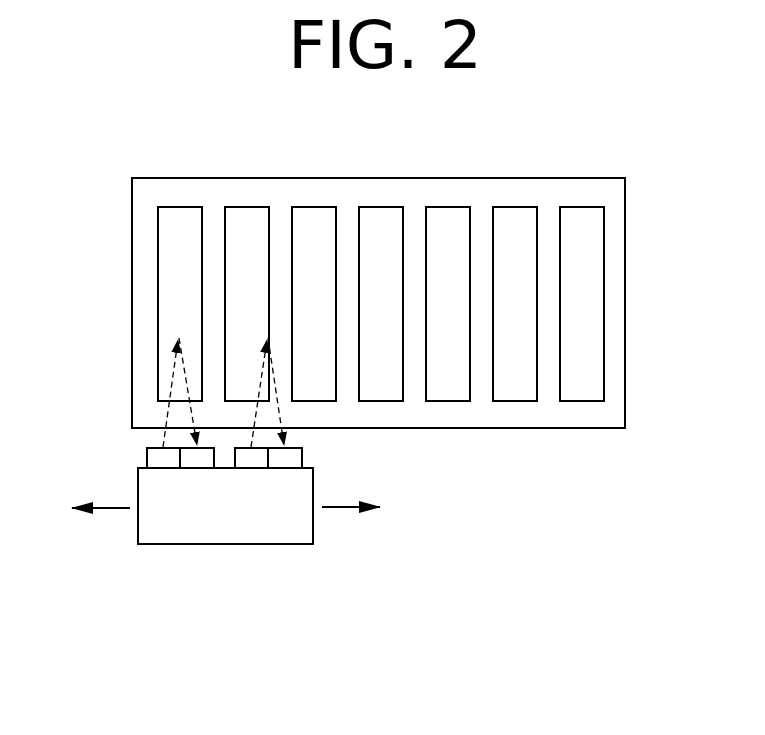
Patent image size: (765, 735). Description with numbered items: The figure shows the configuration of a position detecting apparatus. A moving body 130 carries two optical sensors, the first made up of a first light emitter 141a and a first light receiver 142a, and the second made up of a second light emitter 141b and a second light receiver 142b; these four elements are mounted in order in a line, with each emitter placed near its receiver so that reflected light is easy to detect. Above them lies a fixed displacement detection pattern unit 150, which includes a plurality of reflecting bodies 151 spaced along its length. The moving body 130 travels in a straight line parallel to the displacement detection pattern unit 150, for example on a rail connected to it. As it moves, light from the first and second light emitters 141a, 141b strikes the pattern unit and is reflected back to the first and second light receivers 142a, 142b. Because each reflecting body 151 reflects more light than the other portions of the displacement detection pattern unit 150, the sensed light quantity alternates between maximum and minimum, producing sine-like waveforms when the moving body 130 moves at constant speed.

The moving body 130 is at (138, 482).
The first light emitter 141a is at (158, 468).
The first light receiver 142a is at (202, 468).
The second light emitter 141b is at (250, 468).
The second light receiver 142b is at (290, 468).
The displacement detection pattern unit 150 is at (625, 197).
The reflecting body 151 is at (180, 206).